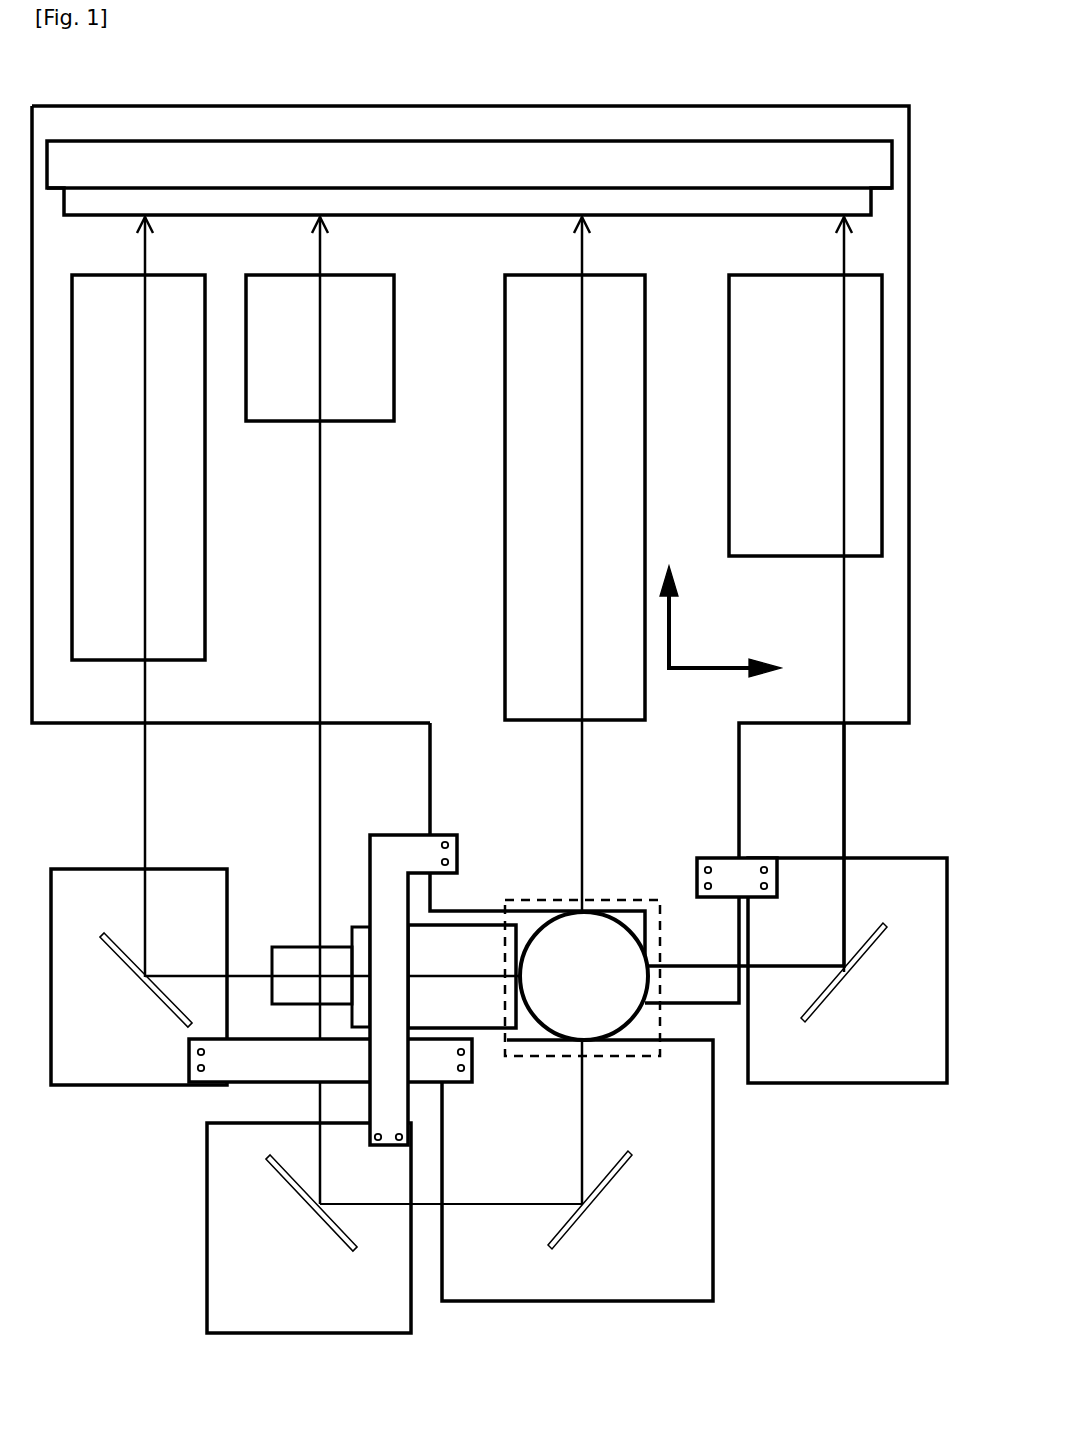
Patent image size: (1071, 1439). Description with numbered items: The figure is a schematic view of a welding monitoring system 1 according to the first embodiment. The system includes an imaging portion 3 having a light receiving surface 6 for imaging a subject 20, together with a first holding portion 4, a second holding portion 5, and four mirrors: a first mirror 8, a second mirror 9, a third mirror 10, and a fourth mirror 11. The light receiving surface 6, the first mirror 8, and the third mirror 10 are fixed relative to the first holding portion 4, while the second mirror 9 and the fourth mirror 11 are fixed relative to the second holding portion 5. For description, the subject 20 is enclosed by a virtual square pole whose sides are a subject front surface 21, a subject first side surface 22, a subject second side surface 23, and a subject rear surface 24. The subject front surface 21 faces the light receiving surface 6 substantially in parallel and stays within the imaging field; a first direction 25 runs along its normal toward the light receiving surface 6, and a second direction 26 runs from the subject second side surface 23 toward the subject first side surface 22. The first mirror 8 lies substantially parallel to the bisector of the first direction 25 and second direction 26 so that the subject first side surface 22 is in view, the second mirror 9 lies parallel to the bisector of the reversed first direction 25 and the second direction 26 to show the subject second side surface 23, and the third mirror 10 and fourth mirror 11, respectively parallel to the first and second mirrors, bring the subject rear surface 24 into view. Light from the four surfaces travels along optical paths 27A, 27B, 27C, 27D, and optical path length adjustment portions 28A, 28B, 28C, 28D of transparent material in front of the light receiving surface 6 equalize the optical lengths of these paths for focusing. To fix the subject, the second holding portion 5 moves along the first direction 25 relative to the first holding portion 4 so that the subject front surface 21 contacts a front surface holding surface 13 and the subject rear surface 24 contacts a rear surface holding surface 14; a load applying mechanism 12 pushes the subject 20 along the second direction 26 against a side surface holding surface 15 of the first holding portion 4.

The welding monitoring system 1 is at (81, 72).
The imaging portion 3 is at (287, 140).
The first holding portion 4 is at (220, 724).
The second holding portion 5 is at (713, 1140).
The light receiving surface 6 is at (222, 216).
The first mirror 8 is at (868, 935).
The second mirror 9 is at (127, 968).
The third mirror 10 is at (622, 1172).
The fourth mirror 11 is at (283, 1180).
The load applying mechanism 12 is at (360, 926).
The front surface holding surface 13 is at (530, 906).
The rear surface holding surface 14 is at (544, 1028).
The side surface holding surface 15 is at (645, 920).
The subject 20 is at (628, 1026).
The subject front surface 21 is at (616, 900).
The subject first side surface 22 is at (660, 1028).
The subject second side surface 23 is at (505, 952).
The subject rear surface 24 is at (522, 1058).
The first direction 25 is at (672, 622).
The second direction 26 is at (697, 672).
The optical path 27A is at (147, 335).
The optical path 27B is at (322, 335).
The optical path 27C is at (583, 335).
The optical path 27D is at (841, 335).
The optical path length adjustment portion 28A is at (205, 428).
The optical path length adjustment portion 28B is at (358, 423).
The optical path length adjustment portion 28C is at (645, 428).
The optical path length adjustment portion 28D is at (863, 558).